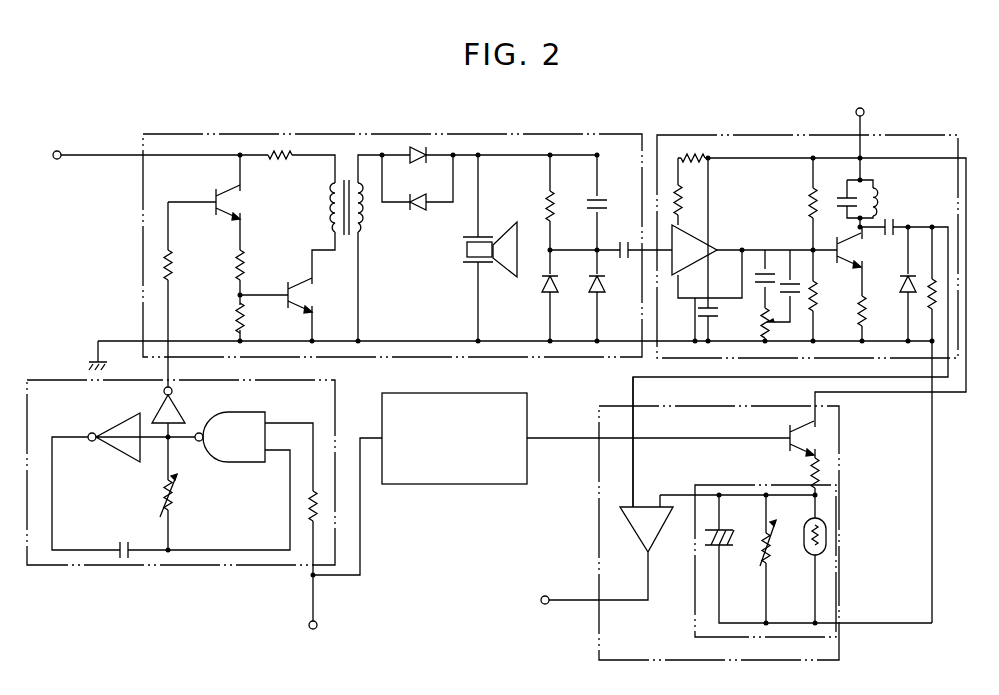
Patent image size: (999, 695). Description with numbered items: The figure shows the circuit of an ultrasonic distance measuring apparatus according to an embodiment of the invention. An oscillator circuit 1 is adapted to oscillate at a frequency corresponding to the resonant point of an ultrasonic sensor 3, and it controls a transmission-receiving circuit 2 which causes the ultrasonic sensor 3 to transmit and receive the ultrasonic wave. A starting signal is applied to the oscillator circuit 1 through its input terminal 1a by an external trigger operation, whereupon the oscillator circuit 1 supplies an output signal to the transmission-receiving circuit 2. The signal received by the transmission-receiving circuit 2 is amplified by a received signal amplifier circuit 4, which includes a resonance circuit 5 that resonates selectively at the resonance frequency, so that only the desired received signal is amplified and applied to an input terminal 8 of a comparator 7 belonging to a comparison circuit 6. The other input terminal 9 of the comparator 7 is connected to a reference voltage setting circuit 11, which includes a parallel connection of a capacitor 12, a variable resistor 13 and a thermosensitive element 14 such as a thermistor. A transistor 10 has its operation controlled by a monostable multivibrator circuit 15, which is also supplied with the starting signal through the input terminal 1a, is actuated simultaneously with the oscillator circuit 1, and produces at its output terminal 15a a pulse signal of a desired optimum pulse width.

The oscillator circuit 1 is at (74, 568).
The input terminal 1a is at (318, 630).
The transmission-receiving circuit 2 is at (492, 246).
The ultrasonic sensor 3 is at (506, 231).
The received signal amplifier circuit 4 is at (799, 364).
The resonance circuit 5 is at (875, 181).
The comparison circuit 6 is at (736, 518).
The comparator 7 is at (637, 539).
The input terminal 8 is at (632, 476).
The other input terminal 9 is at (665, 495).
The transistor 10 is at (803, 421).
The reference voltage setting circuit 11 is at (794, 561).
The capacitor 12 is at (732, 547).
The variable resistor 13 is at (781, 548).
The thermosensitive element 14 is at (803, 541).
The monostable multivibrator circuit 15 is at (519, 485).
The output terminal 15a is at (563, 437).